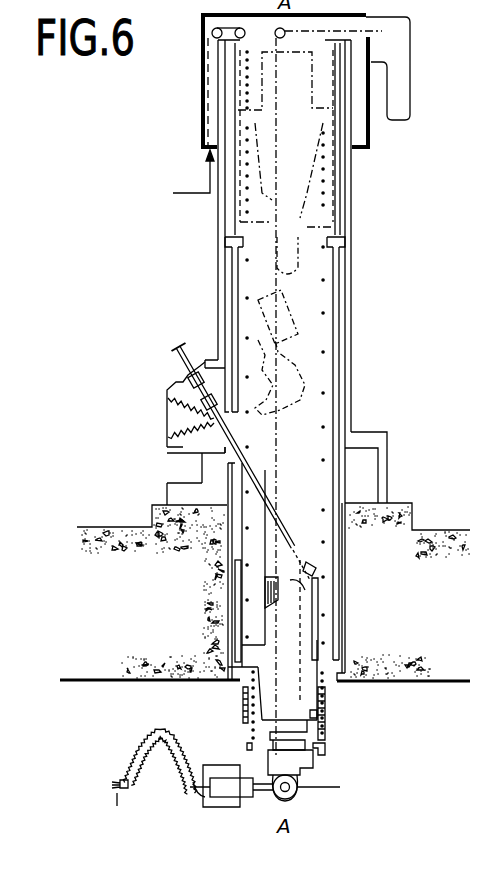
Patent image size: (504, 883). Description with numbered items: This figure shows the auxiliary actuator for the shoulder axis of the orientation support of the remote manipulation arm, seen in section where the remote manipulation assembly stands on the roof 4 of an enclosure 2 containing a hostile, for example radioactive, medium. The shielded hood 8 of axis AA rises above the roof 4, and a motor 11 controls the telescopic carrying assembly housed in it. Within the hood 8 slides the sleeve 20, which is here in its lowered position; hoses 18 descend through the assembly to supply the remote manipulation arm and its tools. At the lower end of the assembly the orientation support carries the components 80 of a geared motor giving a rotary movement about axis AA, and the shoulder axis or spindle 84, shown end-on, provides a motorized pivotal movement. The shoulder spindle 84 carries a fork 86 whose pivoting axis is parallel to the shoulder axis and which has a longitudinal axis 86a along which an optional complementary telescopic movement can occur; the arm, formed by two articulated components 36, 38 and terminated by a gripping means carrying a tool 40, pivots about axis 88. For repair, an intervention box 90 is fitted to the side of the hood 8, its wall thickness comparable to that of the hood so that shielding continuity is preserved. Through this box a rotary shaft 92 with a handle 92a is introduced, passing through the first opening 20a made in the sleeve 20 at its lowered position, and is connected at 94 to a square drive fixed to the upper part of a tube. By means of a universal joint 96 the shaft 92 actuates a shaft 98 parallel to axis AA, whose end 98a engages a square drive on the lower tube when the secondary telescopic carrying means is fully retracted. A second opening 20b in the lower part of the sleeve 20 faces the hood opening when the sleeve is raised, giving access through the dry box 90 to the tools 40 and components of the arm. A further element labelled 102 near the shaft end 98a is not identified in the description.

The enclosure 2 is at (265, 700).
The roof 4 is at (270, 590).
The hood 8 is at (390, 432).
The motor 11 is at (406, 107).
The hoses 18 is at (323, 350).
The sleeve 20 is at (347, 280).
The first opening 20a is at (237, 427).
The second opening 20b is at (240, 613).
The articulated component 36 is at (178, 760).
The fore-arm 38 is at (133, 768).
The tool 40 is at (117, 789).
The geared motor components 80 is at (303, 753).
The shoulder axis 84 is at (298, 790).
The fork 86 is at (257, 793).
The longitudinal axis 86a is at (193, 800).
The pivoting axis 88 is at (217, 777).
The intervention box 90 is at (168, 387).
The rotary shaft 92 is at (281, 530).
The handle 92a is at (177, 343).
The connection 94 is at (312, 565).
The universal joint 96 is at (313, 588).
The shaft 98 is at (317, 630).
The shaft end 98a is at (330, 718).
The stop 102 is at (330, 758).